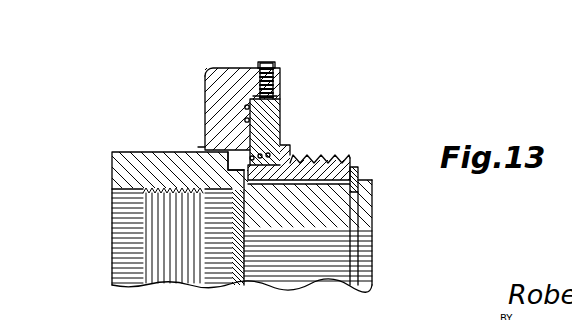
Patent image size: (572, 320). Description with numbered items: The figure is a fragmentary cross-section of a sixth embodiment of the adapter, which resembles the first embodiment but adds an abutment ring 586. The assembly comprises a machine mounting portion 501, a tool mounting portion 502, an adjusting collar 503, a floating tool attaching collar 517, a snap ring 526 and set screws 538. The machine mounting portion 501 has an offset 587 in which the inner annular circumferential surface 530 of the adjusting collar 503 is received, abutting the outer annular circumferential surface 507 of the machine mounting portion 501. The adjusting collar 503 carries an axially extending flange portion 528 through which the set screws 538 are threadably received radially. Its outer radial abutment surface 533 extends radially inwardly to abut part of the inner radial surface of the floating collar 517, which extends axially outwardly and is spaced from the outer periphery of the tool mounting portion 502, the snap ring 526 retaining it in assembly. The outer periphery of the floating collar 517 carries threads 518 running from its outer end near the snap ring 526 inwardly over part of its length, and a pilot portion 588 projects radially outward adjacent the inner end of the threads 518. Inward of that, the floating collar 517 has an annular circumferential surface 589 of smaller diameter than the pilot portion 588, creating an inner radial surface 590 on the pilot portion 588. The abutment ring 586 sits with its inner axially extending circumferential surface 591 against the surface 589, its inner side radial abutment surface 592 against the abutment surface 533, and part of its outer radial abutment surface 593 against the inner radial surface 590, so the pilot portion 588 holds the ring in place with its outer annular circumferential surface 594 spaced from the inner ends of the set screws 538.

The machine mounting portion 501 is at (113, 163).
The tool mounting portion 502 is at (330, 214).
The adjusting collar 503 is at (218, 97).
The outer annular circumferential surface 507 is at (240, 170).
The floating tool attaching collar 517 is at (382, 137).
The threads 518 is at (348, 163).
The snap ring 526 is at (358, 173).
The axially extending flange portion 528 is at (237, 82).
The inner annular circumferential surface 530 is at (205, 165).
The outer radial abutment surface 533 is at (250, 122).
The set screws 538 is at (272, 67).
The abutment ring 586 is at (283, 118).
The offset 587 is at (242, 168).
The pilot portion 588 is at (292, 158).
The annular circumferential surface 589 is at (262, 160).
The inner radial surface 590 is at (275, 150).
The inner axially extending circumferential surface 591 is at (246, 155).
The inner side radial abutment surface 592 is at (283, 110).
The outer radial abutment surface 593 is at (283, 127).
The outer annular circumferential surface 594 is at (262, 93).